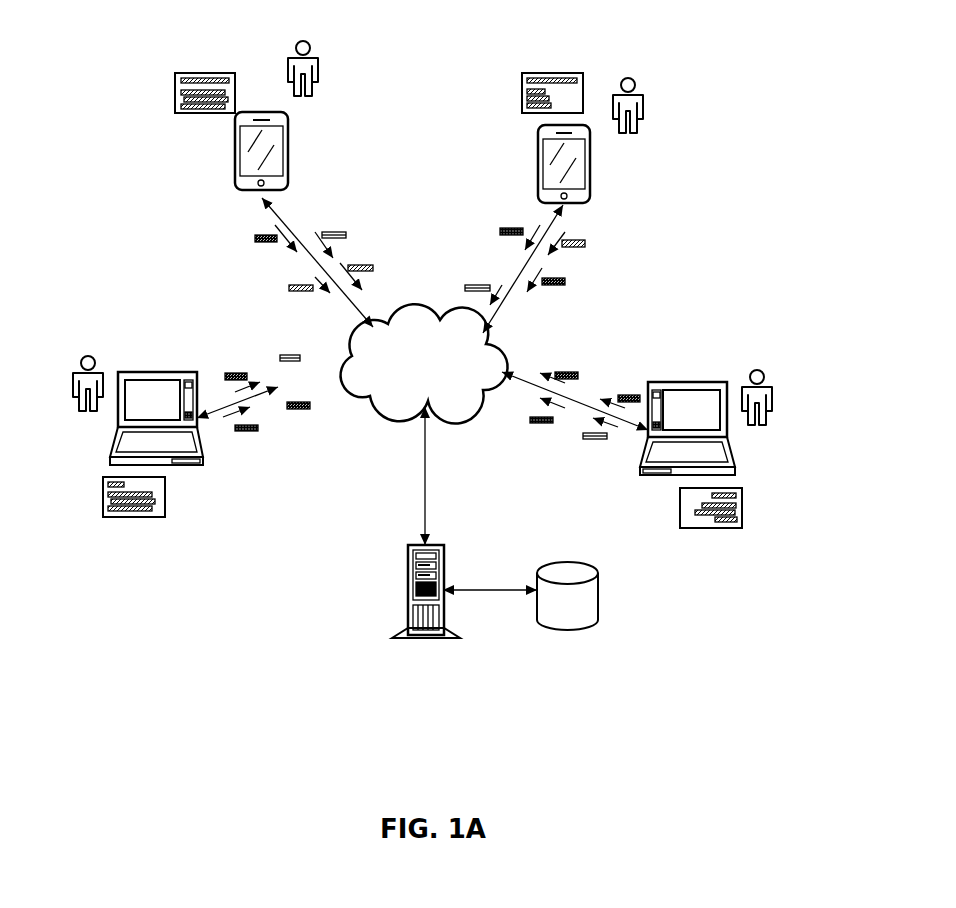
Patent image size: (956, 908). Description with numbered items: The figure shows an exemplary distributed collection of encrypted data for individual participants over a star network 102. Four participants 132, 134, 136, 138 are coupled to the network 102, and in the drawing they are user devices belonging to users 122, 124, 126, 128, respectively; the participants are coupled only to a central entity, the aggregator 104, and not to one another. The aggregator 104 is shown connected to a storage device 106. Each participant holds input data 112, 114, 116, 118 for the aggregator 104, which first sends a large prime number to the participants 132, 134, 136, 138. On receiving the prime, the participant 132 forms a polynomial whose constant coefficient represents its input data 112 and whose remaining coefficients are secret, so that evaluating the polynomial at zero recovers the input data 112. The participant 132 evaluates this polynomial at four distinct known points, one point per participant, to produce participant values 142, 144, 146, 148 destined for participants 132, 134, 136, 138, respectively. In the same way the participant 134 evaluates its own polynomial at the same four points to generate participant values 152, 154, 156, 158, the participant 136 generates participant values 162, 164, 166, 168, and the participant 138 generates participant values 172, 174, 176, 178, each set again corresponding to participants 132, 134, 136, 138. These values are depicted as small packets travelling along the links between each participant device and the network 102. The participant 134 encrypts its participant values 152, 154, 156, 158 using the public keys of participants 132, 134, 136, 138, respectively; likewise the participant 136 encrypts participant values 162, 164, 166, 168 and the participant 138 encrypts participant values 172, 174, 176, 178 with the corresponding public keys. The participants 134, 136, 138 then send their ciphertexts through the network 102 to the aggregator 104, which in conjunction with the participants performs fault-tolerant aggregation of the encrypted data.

The star network 102 is at (424, 363).
The aggregator 104 is at (408, 590).
The storage device 106 is at (598, 600).
The input data 112 is at (210, 73).
The input data 114 is at (548, 73).
The input data 116 is at (165, 505).
The input data 118 is at (680, 517).
The user 122 is at (316, 58).
The user 124 is at (645, 97).
The user 126 is at (78, 420).
The user 128 is at (768, 430).
The participant 132 is at (235, 140).
The participant 134 is at (590, 152).
The participant 136 is at (160, 372).
The participant 138 is at (688, 382).
The participant value 142 is at (252, 238).
The participant value 144 is at (286, 288).
The participant value 146 is at (335, 230).
The participant value 148 is at (362, 263).
The participant value 152 is at (498, 231).
The participant value 154 is at (470, 283).
The participant value 156 is at (586, 243).
The participant value 158 is at (566, 281).
The participant value 162 is at (234, 428).
The participant value 164 is at (312, 406).
The participant value 166 is at (230, 371).
The participant value 168 is at (285, 353).
The participant value 172 is at (608, 436).
The participant value 174 is at (528, 419).
The participant value 176 is at (628, 393).
The participant value 178 is at (560, 370).